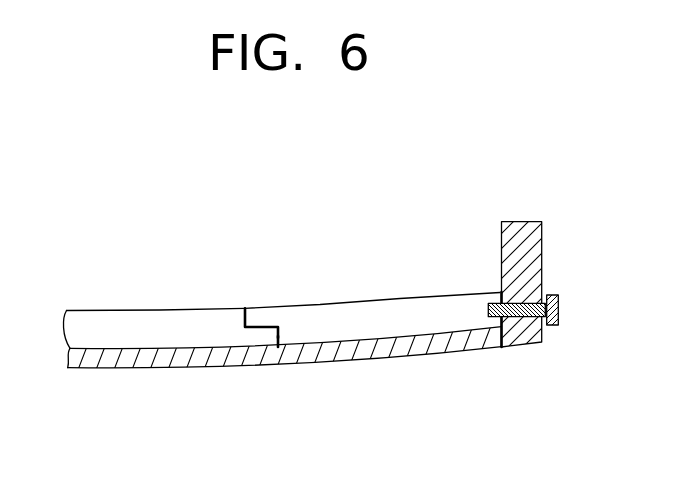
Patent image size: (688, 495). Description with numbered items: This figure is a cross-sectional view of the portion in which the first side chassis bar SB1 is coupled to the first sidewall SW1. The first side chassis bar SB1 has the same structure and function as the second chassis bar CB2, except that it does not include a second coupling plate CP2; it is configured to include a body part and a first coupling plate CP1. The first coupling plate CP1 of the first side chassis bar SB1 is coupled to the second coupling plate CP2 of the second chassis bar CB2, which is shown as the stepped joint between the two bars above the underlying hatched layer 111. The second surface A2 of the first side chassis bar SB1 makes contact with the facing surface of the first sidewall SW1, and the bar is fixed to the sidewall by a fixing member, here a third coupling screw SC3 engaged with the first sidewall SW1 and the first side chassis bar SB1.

The second chassis bar CB2 is at (155, 323).
The first coupling plate CP1 is at (263, 314).
The second coupling plate CP2 is at (267, 341).
The first side chassis bar SB1 is at (358, 310).
The body plate 111 is at (385, 352).
The second surface A2 is at (500, 299).
The first sidewall SW1 is at (522, 252).
The third coupling screw SC3 is at (559, 310).